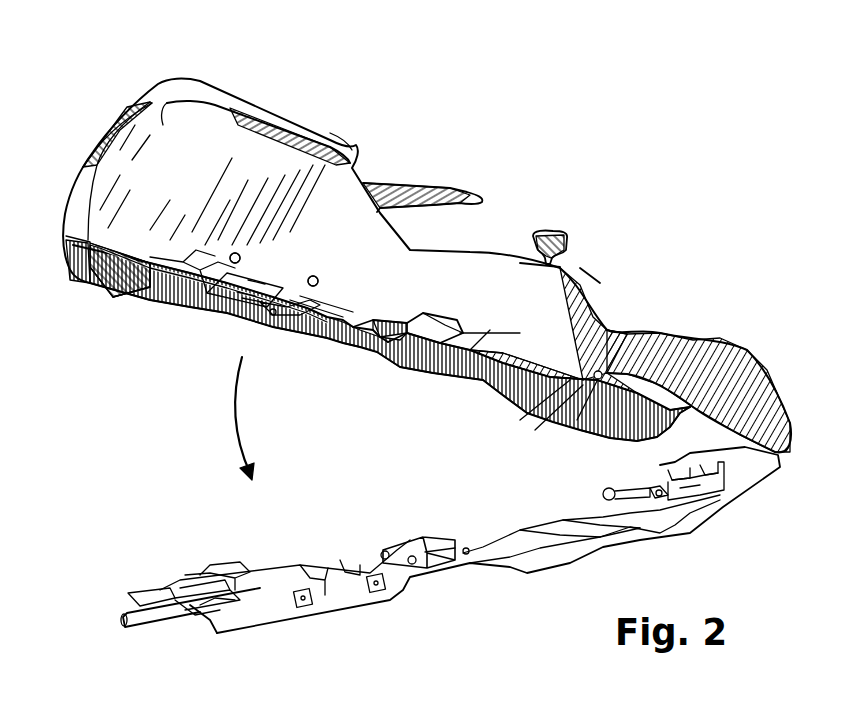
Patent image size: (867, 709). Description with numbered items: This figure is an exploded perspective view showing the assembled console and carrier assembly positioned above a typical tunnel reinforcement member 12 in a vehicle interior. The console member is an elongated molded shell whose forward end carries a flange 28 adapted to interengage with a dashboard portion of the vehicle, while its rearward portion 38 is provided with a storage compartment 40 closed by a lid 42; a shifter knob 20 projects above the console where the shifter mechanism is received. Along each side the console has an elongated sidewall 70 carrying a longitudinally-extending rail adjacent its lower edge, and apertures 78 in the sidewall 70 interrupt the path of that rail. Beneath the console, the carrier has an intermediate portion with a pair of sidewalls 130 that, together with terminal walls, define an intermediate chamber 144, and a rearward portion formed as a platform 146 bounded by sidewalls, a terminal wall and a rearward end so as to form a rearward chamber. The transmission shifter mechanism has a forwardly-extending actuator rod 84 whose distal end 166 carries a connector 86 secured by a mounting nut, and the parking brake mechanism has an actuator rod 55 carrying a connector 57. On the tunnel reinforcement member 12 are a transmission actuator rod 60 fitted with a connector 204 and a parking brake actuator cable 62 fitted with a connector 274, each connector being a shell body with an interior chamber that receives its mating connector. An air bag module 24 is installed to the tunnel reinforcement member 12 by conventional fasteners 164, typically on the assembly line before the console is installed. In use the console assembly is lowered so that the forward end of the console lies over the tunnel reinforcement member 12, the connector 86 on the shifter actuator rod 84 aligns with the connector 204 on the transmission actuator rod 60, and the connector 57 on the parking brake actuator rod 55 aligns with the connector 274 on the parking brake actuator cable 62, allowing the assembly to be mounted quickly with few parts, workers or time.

The tunnel reinforcement member 12 is at (318, 570).
The control knob 20 is at (566, 228).
The air bag module 24 is at (405, 527).
The flange 28 is at (752, 355).
The rearward portion 38 is at (417, 187).
The storage compartment 40 is at (140, 163).
The lid 42 is at (233, 87).
The actuator rod 55 is at (210, 335).
The connector 57 is at (178, 300).
The transmission actuator rod 60 is at (643, 490).
The parking brake actuator cable 62 is at (147, 620).
The sidewall 70 is at (660, 417).
The aperture 78 is at (240, 254).
The actuator rod 84 is at (542, 420).
The connector 86 is at (573, 427).
The sidewall 130 is at (343, 327).
The intermediate chamber 144 is at (377, 350).
The platform 146 is at (147, 300).
The fastener 164 is at (383, 548).
The distal end 166 is at (238, 254).
The connector 204 is at (606, 489).
The connector 274 is at (204, 560).